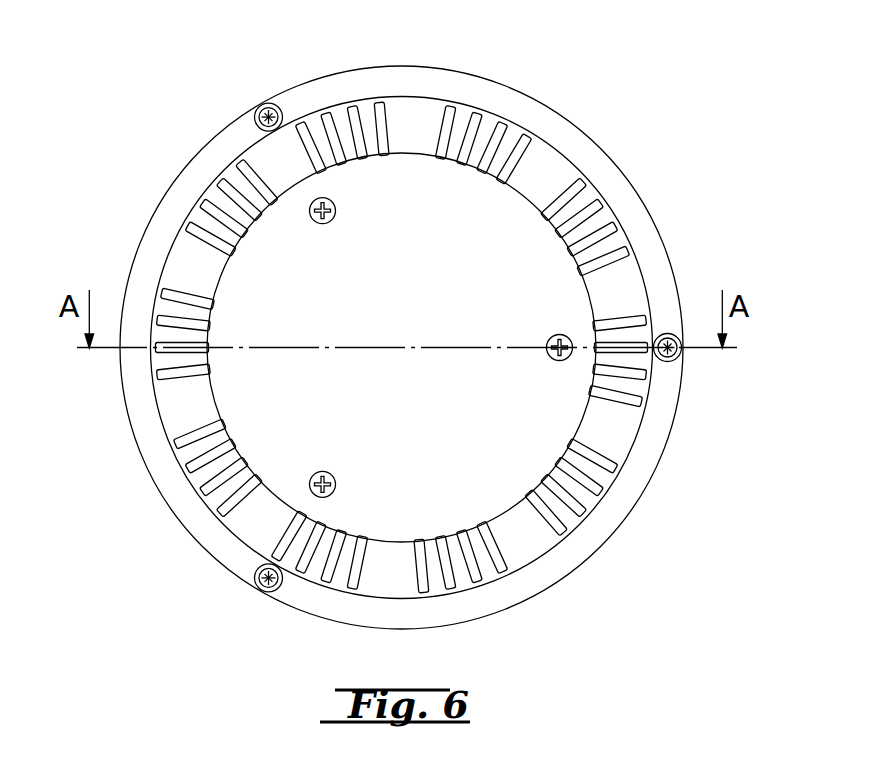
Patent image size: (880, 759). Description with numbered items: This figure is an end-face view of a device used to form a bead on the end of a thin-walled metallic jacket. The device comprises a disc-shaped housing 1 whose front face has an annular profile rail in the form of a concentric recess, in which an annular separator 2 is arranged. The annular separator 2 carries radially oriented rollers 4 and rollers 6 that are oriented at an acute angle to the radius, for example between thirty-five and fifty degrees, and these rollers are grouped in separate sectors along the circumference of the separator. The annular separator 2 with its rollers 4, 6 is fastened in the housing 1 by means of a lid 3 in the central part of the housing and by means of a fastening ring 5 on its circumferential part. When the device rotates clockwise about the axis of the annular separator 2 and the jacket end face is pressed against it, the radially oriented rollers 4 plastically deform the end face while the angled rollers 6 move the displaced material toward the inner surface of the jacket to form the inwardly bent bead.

The housing 1 is at (517, 87).
The annular separator 2 is at (432, 137).
The lid 3 is at (556, 300).
The rollers 4 is at (597, 487).
The fastening ring 5 is at (618, 164).
The rollers 6 is at (563, 524).